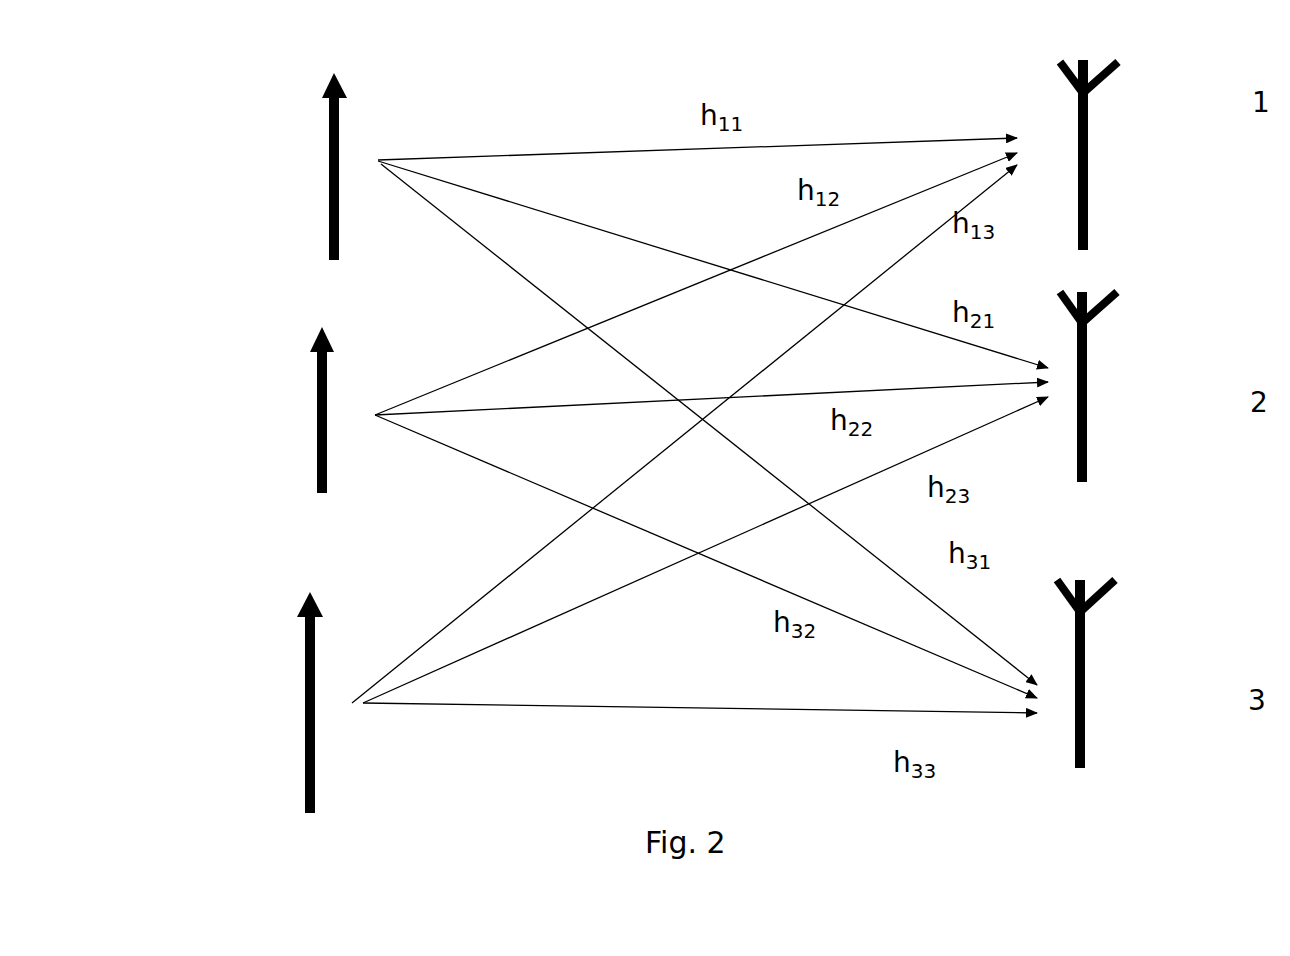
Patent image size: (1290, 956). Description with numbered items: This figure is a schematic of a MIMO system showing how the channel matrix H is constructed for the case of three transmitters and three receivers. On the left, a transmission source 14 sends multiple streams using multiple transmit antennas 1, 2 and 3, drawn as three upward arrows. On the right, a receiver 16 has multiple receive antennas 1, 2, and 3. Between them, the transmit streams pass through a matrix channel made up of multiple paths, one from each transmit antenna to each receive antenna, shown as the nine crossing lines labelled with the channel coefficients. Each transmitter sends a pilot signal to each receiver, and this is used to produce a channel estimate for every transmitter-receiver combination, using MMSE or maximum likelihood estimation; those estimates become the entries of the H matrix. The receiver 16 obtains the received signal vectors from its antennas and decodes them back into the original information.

The transmission source 14 is at (388, 117).
The receiver 16 is at (1052, 117).
The antenna 1 is at (287, 166).
The antenna 2 is at (279, 410).
The antenna 3 is at (273, 702).